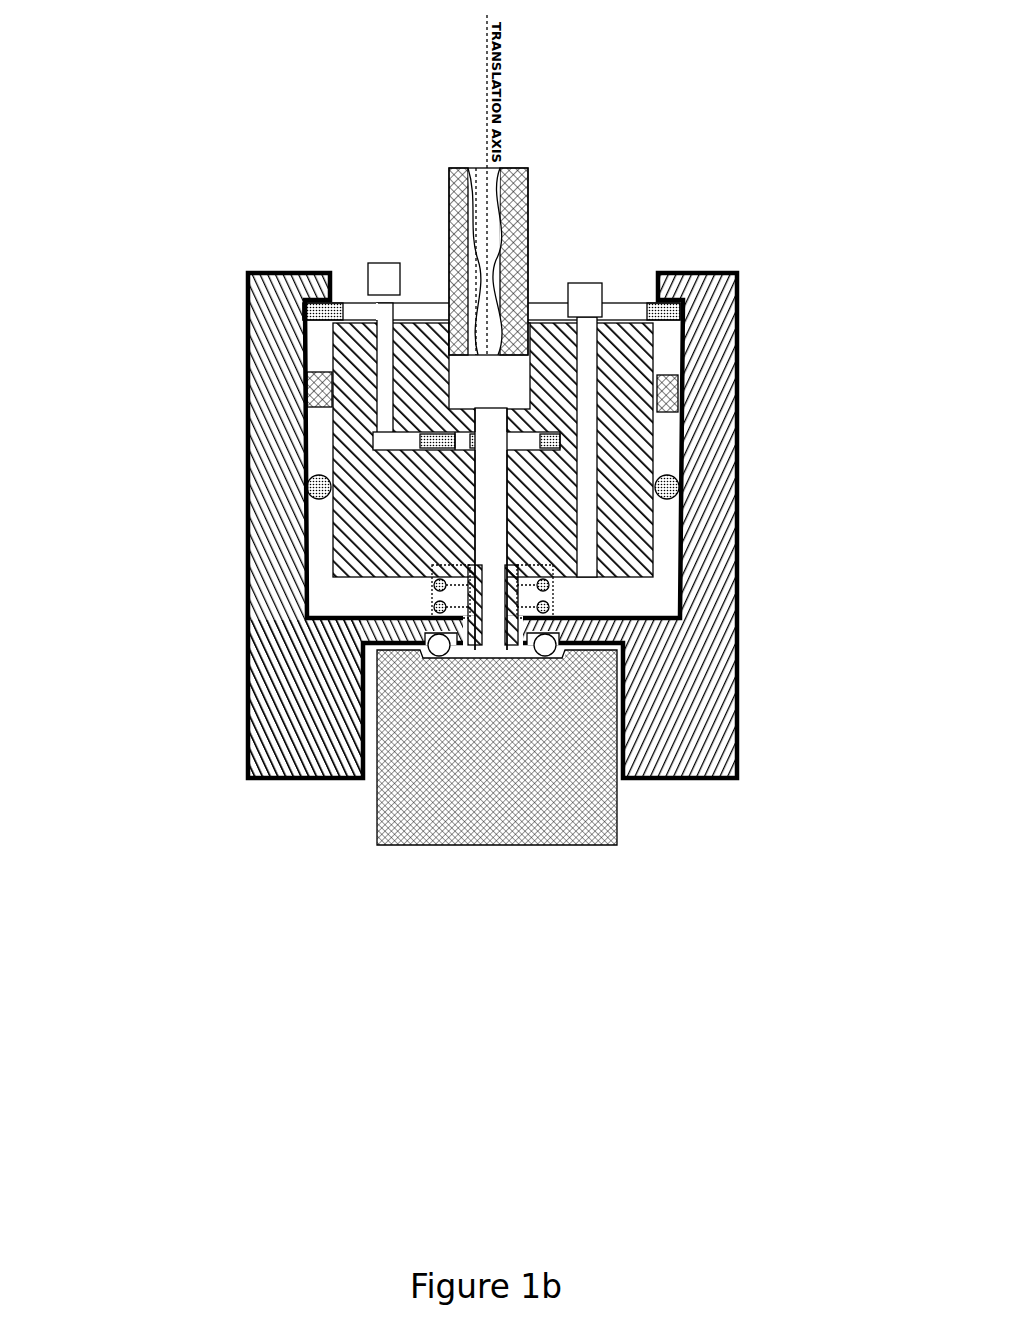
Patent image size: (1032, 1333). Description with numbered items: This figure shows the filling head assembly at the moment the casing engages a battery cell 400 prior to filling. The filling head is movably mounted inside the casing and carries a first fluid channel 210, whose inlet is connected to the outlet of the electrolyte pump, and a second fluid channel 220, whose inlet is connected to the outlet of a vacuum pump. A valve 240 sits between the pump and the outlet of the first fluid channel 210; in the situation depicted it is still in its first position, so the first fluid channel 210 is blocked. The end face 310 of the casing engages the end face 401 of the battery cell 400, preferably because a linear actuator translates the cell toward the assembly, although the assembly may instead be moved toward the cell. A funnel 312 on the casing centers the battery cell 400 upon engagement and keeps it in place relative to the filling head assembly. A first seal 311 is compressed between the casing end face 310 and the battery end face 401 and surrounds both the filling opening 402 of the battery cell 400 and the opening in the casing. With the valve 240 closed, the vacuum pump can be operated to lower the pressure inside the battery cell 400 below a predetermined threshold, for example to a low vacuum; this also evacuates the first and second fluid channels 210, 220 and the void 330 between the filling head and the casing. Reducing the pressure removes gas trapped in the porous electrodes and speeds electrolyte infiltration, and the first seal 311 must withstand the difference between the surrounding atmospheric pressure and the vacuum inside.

The end face of the casing 310 is at (370, 640).
The funnel 312 is at (310, 718).
The second fluid channel 220 is at (583, 385).
The first fluid channel 210 is at (490, 484).
The valve 240 is at (493, 439).
The void 330 is at (597, 604).
The battery cell 400 is at (600, 817).
The first seal 311 is at (439, 656).
The end face of the battery cell 401 is at (550, 665).
The filling opening 402 is at (490, 665).